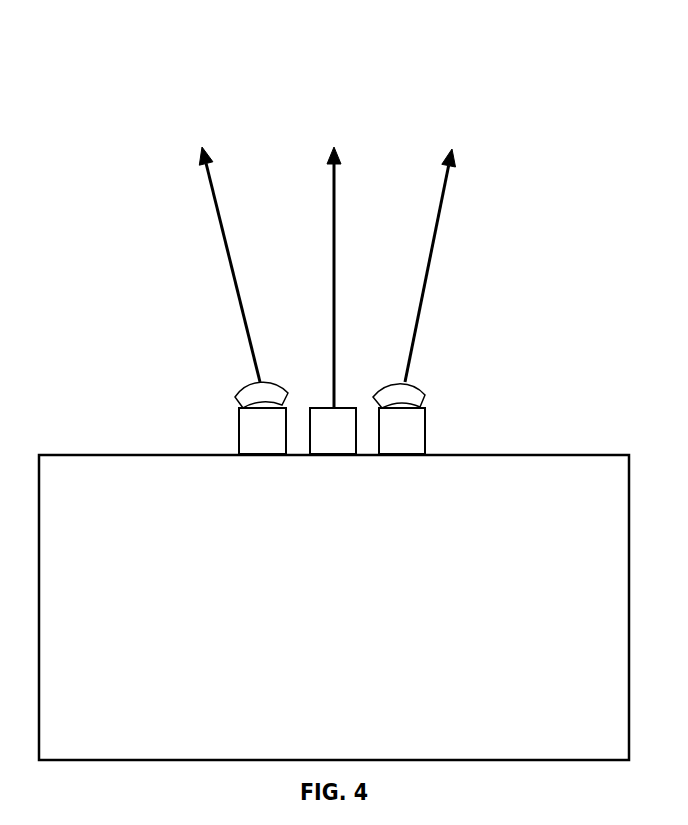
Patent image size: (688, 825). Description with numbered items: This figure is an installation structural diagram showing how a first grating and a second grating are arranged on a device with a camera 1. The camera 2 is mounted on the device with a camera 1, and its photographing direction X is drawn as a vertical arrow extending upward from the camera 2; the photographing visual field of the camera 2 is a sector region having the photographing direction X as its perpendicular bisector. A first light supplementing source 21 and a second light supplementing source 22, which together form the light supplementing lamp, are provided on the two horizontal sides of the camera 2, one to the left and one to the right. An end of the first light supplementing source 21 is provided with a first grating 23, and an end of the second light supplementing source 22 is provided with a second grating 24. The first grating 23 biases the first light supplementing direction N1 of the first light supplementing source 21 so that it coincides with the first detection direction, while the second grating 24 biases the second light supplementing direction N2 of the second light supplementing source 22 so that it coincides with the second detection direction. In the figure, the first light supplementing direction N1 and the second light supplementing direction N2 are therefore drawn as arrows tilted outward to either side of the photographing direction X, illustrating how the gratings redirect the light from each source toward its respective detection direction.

The device with a camera 1 is at (334, 607).
The camera 2 is at (333, 431).
The first light supplementing source 21 is at (262, 431).
The second light supplementing source 22 is at (402, 431).
The first grating 23 is at (245, 395).
The second grating 24 is at (418, 393).
The first light supplementing direction N1 is at (210, 178).
The second light supplementing direction N2 is at (435, 242).
The photographing direction X is at (334, 202).